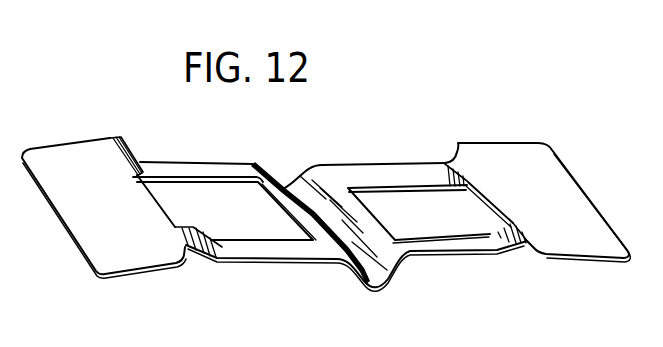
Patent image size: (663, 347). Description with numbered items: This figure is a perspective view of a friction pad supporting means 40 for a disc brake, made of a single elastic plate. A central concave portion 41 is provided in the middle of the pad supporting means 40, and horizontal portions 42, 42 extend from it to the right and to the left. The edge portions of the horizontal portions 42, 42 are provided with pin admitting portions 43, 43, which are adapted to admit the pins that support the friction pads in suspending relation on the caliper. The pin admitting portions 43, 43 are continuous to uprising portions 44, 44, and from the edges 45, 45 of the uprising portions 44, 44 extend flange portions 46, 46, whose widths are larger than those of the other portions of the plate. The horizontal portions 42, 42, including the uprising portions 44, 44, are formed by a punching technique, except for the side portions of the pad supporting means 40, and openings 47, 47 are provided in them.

The pad supporting means 40 is at (343, 112).
The central concave portion 41 is at (395, 279).
The horizontal portion 42 is at (205, 170).
The pin admitting portion 43 is at (153, 172).
The uprising portion 44 is at (139, 157).
The edge 45 is at (122, 138).
The flange portion 46 is at (113, 213).
The opening 47 is at (243, 219).